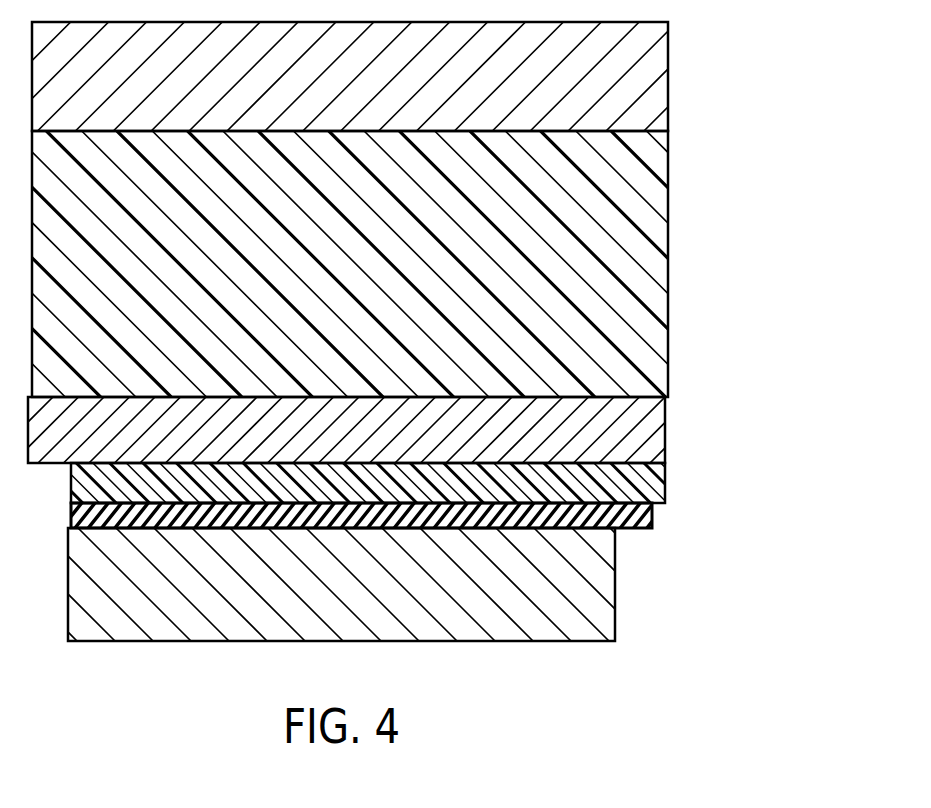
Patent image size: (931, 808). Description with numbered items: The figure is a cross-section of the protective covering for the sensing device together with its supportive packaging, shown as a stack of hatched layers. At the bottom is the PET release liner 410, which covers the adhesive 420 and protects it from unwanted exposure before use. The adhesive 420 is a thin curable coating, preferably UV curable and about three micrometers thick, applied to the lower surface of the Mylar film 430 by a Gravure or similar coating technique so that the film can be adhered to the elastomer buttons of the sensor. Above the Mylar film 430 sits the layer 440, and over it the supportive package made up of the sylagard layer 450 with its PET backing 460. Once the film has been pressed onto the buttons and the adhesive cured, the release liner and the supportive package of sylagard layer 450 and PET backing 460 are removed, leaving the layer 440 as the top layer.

The PET release liner 410 is at (615, 588).
The adhesive 420 is at (665, 485).
The Mylar film 430 is at (652, 516).
The top layer 440 is at (665, 428).
The sylagard layer 450 is at (668, 256).
The PET backing 460 is at (668, 75).